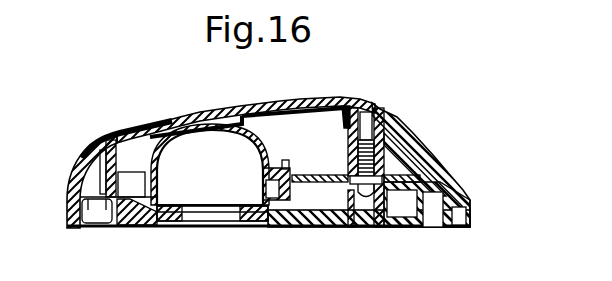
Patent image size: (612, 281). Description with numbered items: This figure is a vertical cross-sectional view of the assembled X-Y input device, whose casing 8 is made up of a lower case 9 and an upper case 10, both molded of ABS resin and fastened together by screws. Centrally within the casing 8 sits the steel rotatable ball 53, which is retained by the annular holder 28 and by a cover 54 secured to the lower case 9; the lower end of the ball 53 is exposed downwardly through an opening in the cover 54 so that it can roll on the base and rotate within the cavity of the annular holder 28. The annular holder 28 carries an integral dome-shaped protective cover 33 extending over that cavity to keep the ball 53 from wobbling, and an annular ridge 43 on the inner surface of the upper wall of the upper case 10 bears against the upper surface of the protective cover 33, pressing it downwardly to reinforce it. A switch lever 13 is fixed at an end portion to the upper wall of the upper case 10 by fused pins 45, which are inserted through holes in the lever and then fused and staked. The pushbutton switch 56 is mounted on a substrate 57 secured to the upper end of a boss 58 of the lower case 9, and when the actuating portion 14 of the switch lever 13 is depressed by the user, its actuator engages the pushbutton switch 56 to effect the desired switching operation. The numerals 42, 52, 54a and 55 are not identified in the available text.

The casing 8 is at (268, 100).
The lower case 9 is at (295, 205).
The upper case 10 is at (114, 134).
The switch lever 13 is at (364, 90).
The actuating portion 14 is at (406, 113).
The annular holder 28 is at (139, 182).
The protective cover 33 is at (170, 138).
The casing 42 is at (76, 181).
The annular ridge 43 is at (230, 120).
The fused pins 45 is at (333, 84).
The screw 52 is at (363, 197).
The rotatable ball 53 is at (203, 187).
The cover 54 is at (161, 224).
The packing 54a is at (249, 210).
The socket block 55 is at (102, 225).
The pushbutton switch 56 is at (393, 119).
The substrate 57 is at (311, 183).
The boss 58 is at (405, 200).